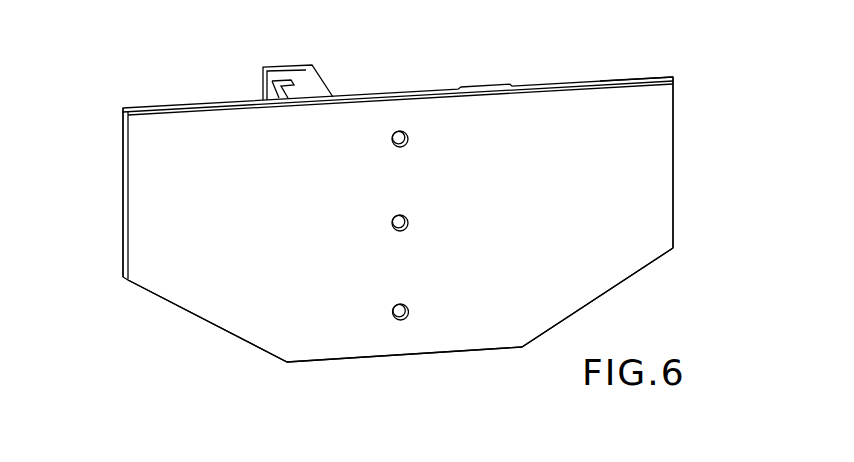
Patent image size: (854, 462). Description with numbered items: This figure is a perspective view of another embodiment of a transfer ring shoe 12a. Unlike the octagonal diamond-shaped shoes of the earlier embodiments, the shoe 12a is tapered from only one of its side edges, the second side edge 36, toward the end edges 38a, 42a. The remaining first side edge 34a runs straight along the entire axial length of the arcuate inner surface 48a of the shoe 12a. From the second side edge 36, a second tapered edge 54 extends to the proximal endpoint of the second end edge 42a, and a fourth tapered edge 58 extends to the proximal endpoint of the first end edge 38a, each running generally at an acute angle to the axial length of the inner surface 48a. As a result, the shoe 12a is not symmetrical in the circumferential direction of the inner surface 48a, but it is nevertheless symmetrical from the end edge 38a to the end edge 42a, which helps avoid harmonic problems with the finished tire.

The transfer ring shoe 12a is at (200, 168).
The first side edge 34a is at (372, 95).
The second side edge 36 is at (467, 352).
The first end edge 38a is at (123, 193).
The second end edge 42a is at (673, 162).
The inner surface 48a is at (655, 108).
The second tapered edge 54 is at (587, 305).
The fourth tapered edge 58 is at (218, 325).